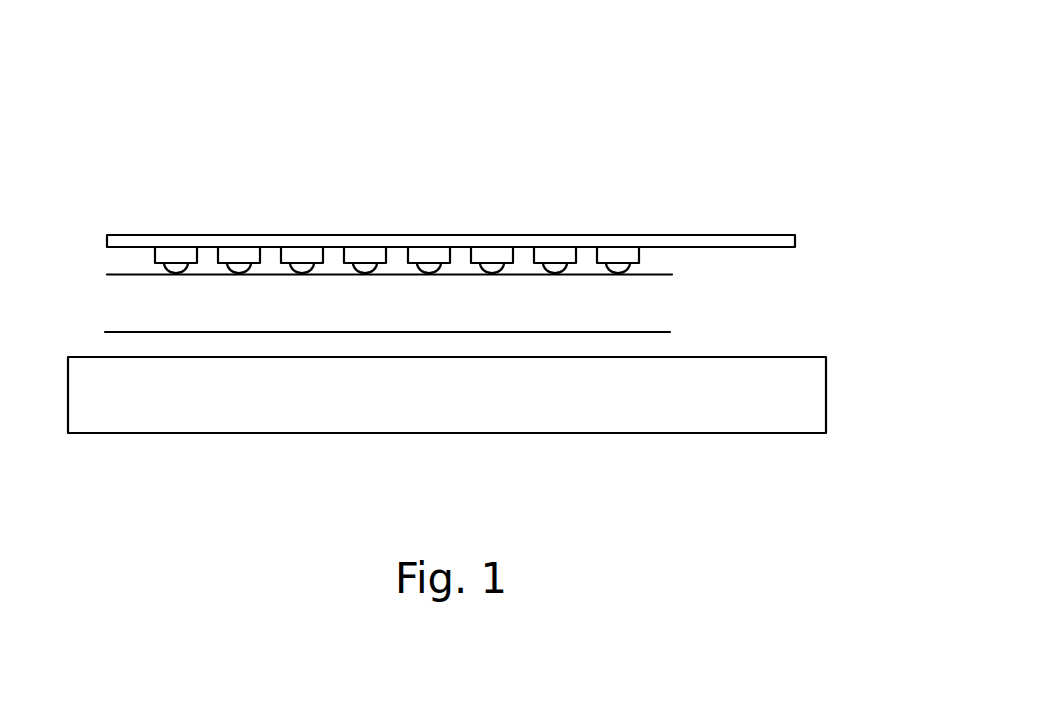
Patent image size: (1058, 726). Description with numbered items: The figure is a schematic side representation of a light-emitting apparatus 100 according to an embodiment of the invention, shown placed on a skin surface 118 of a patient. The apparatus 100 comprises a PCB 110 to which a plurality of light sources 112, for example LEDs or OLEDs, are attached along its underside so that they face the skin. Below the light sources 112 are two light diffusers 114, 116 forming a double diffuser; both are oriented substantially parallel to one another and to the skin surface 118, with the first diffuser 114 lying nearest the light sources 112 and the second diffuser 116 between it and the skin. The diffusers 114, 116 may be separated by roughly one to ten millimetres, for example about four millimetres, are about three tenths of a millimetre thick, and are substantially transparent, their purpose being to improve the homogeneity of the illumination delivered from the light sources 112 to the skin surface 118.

The apparatus 100 is at (489, 88).
The PCB 110 is at (690, 243).
The light sources 112 is at (300, 268).
The light diffuser 114 is at (657, 280).
The light diffuser 116 is at (120, 332).
The skin surface 118 is at (603, 407).